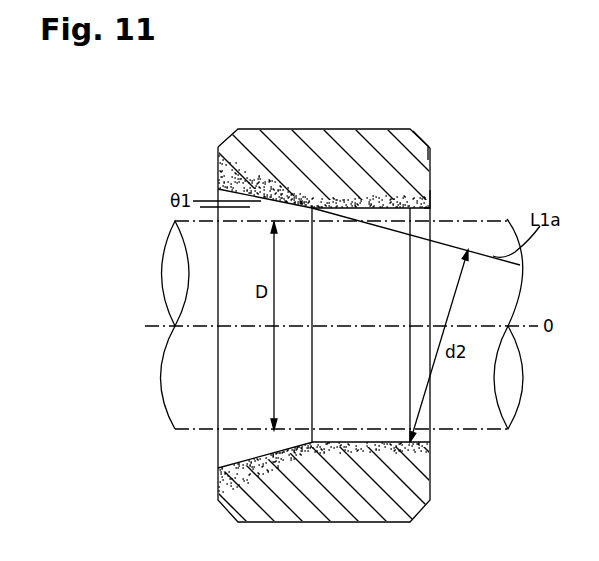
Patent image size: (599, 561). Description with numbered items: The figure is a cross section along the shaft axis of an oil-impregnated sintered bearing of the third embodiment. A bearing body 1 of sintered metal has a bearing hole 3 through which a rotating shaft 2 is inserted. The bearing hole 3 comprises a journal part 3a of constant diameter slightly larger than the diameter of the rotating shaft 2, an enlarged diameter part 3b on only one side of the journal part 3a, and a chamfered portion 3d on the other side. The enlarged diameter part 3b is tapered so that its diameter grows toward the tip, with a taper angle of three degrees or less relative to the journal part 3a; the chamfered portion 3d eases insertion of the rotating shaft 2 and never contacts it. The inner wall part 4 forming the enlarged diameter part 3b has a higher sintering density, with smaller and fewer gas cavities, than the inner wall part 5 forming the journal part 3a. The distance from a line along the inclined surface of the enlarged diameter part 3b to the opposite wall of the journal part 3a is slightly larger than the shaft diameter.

The bearing body 1 is at (313, 133).
The rotating shaft 2 is at (494, 219).
The bearing hole 3 is at (238, 382).
The journal part 3a is at (372, 210).
The enlarged diameter part 3b is at (230, 189).
The chamfered portion 3d is at (430, 194).
The inner wall part 4 is at (274, 184).
The inner wall part 5 is at (353, 198).